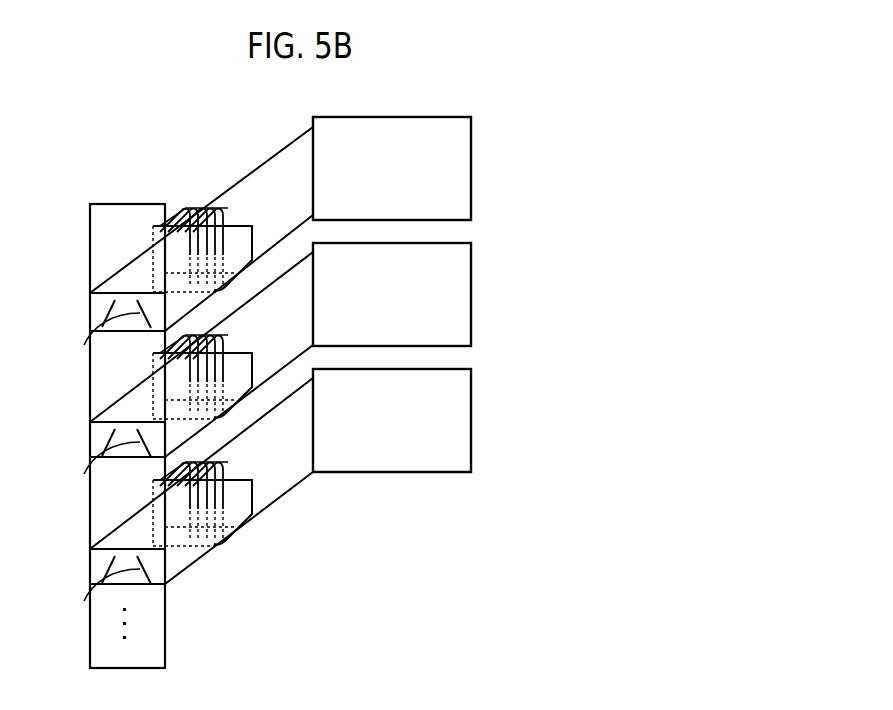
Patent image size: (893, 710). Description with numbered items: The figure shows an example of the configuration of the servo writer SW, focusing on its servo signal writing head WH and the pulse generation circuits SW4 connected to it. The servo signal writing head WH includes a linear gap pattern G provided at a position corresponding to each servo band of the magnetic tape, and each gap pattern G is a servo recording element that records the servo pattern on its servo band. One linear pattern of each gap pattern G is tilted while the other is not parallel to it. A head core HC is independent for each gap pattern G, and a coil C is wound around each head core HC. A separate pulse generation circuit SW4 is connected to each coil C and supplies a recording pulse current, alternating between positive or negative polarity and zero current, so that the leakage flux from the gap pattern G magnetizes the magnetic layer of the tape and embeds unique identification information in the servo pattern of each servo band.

The servo writer SW is at (97, 200).
The servo signal writing head WH is at (127, 215).
The coil C is at (208, 190).
The head core HC is at (118, 264).
The gap pattern G is at (88, 340).
The pulse generation circuit SW4 is at (471, 167).